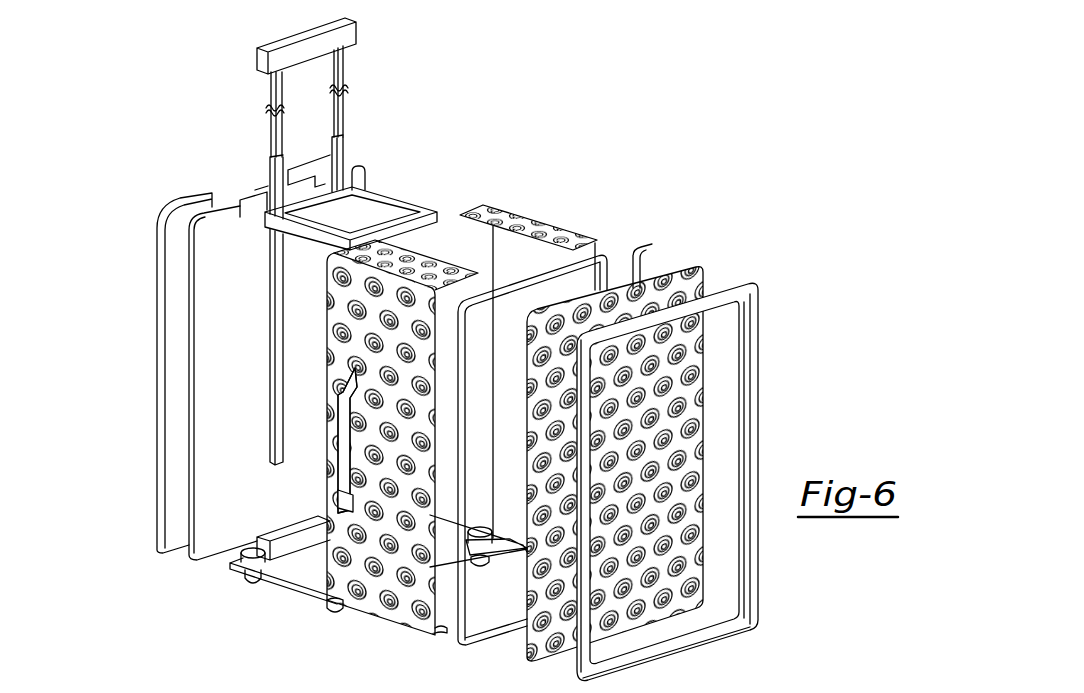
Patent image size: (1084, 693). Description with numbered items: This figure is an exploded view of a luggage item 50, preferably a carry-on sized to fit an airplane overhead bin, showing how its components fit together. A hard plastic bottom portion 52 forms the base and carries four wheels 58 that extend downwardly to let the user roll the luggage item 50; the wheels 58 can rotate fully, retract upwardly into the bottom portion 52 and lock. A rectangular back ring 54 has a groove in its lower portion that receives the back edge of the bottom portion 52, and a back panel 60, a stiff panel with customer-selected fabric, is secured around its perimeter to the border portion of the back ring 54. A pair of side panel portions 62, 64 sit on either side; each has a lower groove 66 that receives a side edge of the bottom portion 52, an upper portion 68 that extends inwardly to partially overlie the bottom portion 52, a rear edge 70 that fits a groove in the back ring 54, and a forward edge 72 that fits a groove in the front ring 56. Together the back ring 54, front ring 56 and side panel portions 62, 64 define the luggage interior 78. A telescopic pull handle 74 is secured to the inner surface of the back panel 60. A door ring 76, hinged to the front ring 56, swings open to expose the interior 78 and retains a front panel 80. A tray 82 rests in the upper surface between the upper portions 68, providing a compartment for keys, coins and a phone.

The luggage item 50 is at (529, 186).
The bottom portion 52 is at (308, 582).
The back ring 54 is at (160, 415).
The front ring 56 is at (641, 267).
The wheels 58 is at (240, 580).
The back panel 60 is at (215, 345).
The side panel portion 62 is at (402, 620).
The side panel portion 64 is at (573, 240).
The lower groove 66 is at (518, 562).
The upper portion 68 is at (462, 215).
The rear edge 70 is at (335, 497).
The forward edge 72 is at (608, 252).
The handle 74 is at (353, 33).
The door ring 76 is at (740, 630).
The luggage interior 78 is at (320, 473).
The front panel 80 is at (672, 455).
The tray 82 is at (400, 210).